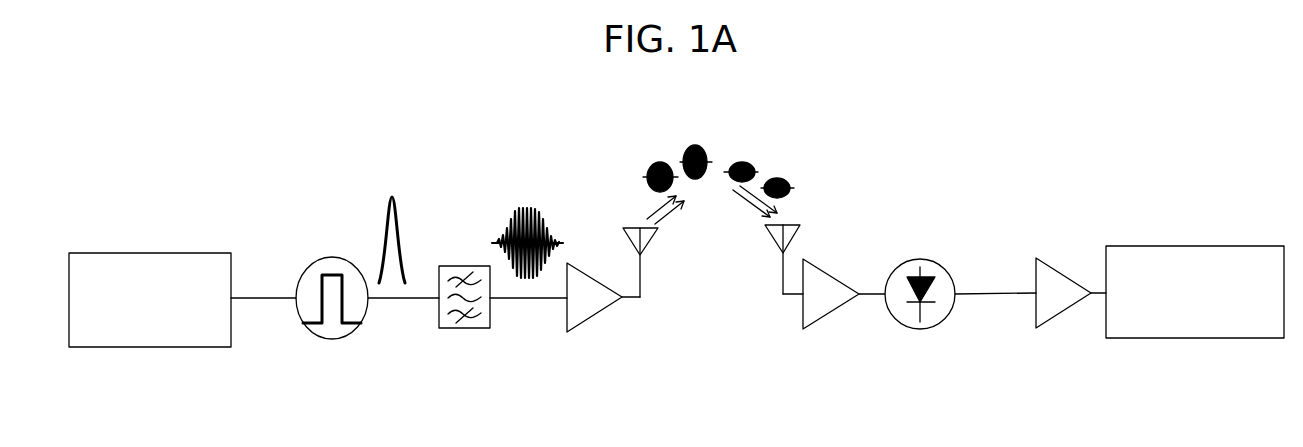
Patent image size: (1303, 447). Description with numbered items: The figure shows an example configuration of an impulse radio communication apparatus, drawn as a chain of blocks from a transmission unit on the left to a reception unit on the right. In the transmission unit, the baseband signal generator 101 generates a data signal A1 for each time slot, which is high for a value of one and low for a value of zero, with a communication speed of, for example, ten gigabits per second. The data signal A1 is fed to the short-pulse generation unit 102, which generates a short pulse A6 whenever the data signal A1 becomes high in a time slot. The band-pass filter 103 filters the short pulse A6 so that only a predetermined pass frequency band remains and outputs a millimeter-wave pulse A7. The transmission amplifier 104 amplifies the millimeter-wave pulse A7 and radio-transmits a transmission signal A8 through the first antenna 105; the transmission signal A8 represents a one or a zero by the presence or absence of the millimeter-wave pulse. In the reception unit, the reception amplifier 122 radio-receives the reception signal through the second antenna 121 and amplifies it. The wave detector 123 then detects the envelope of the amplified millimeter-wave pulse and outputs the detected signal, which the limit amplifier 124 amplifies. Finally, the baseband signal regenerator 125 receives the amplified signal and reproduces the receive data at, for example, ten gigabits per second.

The baseband signal generator 101 is at (112, 252).
The short-pulse generation unit 102 is at (333, 257).
The band-pass filter 103 is at (463, 265).
The transmission amplifier 104 is at (590, 320).
The first antenna 105 is at (637, 226).
The second antenna 121 is at (793, 223).
The reception amplifier 122 is at (842, 275).
The wave detector 123 is at (922, 257).
The limit amplifier 124 is at (1070, 272).
The baseband signal regenerator 125 is at (1157, 245).
The data signal A1 is at (260, 302).
The short pulse A6 is at (383, 193).
The millimeter-wave pulse A7 is at (523, 205).
The transmission signal A8 is at (663, 158).